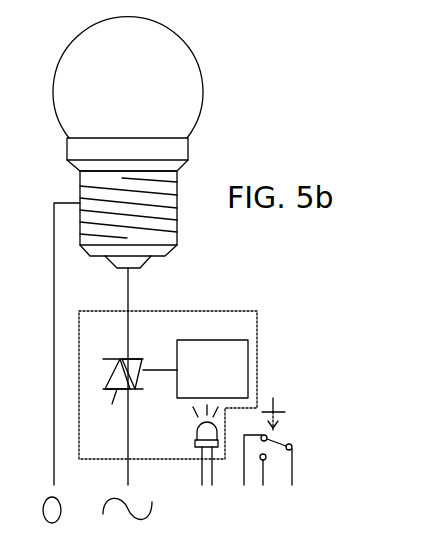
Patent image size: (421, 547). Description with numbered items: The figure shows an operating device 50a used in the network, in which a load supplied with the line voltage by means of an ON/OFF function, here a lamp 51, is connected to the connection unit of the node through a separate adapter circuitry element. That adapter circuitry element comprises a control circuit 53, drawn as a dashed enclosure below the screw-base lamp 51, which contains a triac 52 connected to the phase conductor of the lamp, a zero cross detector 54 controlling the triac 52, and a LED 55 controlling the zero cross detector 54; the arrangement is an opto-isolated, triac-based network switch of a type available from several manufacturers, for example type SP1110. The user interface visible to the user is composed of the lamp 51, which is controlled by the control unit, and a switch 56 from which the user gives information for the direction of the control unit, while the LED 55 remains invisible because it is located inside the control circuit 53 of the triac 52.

The operating device 50a is at (233, 147).
The lamp 51 is at (187, 56).
The triac 52 is at (132, 398).
The control circuit 53 is at (222, 311).
The zero cross detector 54 is at (180, 345).
The LED 55 is at (197, 435).
The switch 56 is at (312, 454).